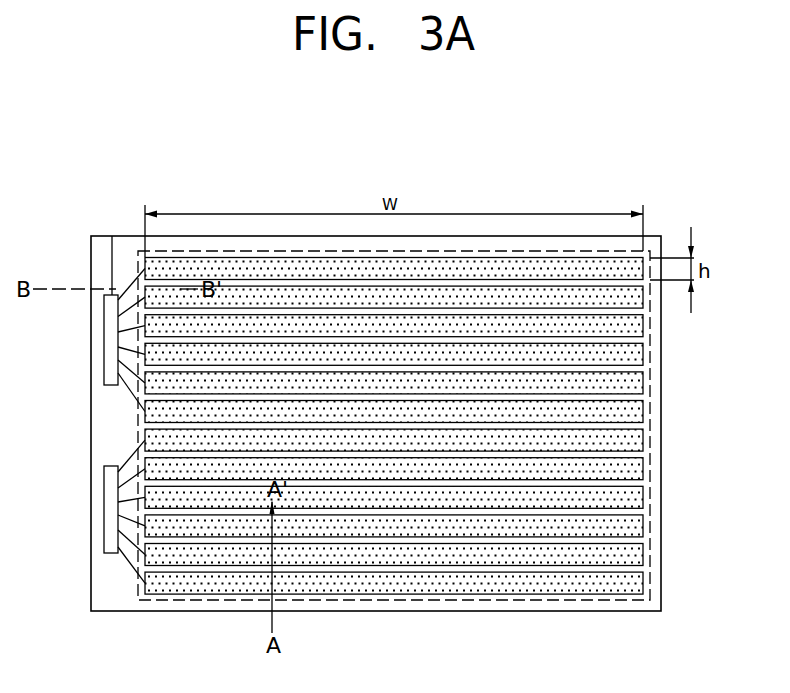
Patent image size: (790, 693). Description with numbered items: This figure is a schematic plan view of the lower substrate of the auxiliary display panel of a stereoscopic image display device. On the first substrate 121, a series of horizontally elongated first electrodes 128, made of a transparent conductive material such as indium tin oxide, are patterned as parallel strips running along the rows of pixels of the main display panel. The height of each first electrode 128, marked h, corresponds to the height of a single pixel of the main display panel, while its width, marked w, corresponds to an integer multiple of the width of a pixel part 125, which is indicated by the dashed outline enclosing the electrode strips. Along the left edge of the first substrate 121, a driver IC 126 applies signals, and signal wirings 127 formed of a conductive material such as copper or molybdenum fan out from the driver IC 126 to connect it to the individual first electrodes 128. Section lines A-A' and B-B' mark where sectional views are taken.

The first substrate 121 is at (682, 214).
The pixel part 125 is at (652, 556).
The driver IC 126 is at (112, 342).
The signal wirings 127 is at (140, 404).
The first electrodes 128 is at (640, 583).